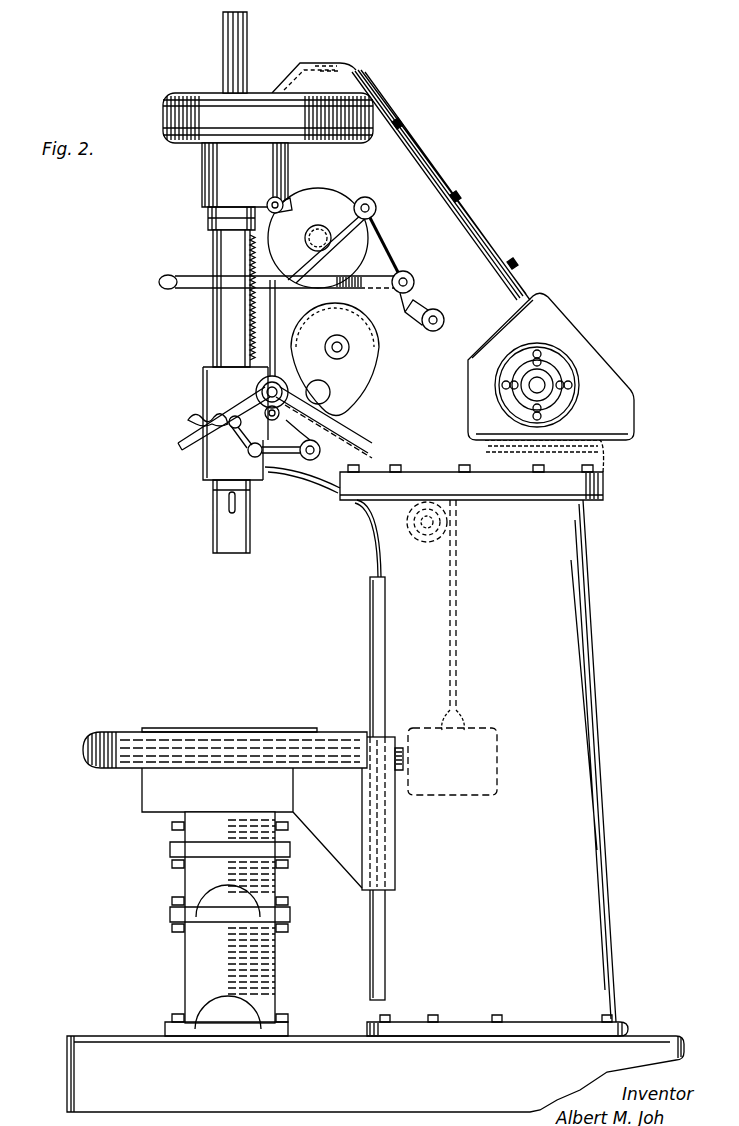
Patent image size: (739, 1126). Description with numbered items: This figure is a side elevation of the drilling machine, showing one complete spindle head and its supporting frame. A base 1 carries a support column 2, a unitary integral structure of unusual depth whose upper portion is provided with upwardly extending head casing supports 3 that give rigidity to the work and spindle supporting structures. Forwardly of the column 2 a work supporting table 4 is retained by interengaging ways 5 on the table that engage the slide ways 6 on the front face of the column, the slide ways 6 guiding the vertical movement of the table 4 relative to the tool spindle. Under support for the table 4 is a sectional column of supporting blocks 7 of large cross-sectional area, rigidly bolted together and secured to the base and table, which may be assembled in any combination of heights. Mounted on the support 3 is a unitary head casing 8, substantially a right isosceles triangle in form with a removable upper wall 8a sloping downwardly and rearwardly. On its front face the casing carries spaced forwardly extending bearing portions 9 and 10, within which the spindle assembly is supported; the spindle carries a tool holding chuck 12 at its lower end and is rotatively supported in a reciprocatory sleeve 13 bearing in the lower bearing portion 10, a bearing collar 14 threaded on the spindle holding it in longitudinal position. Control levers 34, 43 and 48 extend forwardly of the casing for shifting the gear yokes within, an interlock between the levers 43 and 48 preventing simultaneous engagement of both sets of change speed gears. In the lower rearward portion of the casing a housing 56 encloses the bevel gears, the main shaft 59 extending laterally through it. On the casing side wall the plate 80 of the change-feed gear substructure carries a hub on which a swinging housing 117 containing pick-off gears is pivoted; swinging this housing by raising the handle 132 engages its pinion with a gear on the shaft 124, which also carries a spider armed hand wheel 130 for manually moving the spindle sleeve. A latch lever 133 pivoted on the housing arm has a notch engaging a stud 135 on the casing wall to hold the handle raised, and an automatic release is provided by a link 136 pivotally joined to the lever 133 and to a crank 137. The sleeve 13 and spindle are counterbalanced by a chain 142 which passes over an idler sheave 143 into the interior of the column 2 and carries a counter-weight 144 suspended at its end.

The base 1 is at (75, 1063).
The support column 2 is at (596, 881).
The head casing support 3 is at (378, 552).
The work supporting table 4 is at (200, 732).
The interengaging ways 5 is at (396, 845).
The slide ways 6 is at (372, 642).
The supporting blocks 7 is at (178, 935).
The head casing 8 is at (521, 272).
The removable upper wall 8a is at (428, 162).
The bearing portion 9 is at (205, 178).
The bearing portion 10 is at (203, 370).
The tool holding chuck 12 is at (213, 538).
The reciprocatory sleeve 13 is at (218, 330).
The bearing collar 14 is at (222, 240).
The control lever 34 is at (322, 236).
The control lever 43 is at (166, 290).
The control lever 48 is at (424, 306).
The housing 56 is at (615, 382).
The main shaft 59 is at (543, 380).
The plate 80 is at (280, 203).
The swinging housing 117 is at (350, 402).
The shaft 124 is at (261, 392).
The spider armed hand wheel 130 is at (178, 447).
The handle 132 is at (188, 420).
The lever 133 is at (236, 428).
The stud 135 is at (243, 440).
The link 136 is at (268, 471).
The crank 137 is at (302, 470).
The chain 142 is at (458, 568).
The idler sheave 143 is at (413, 545).
The counter-weight 144 is at (497, 748).